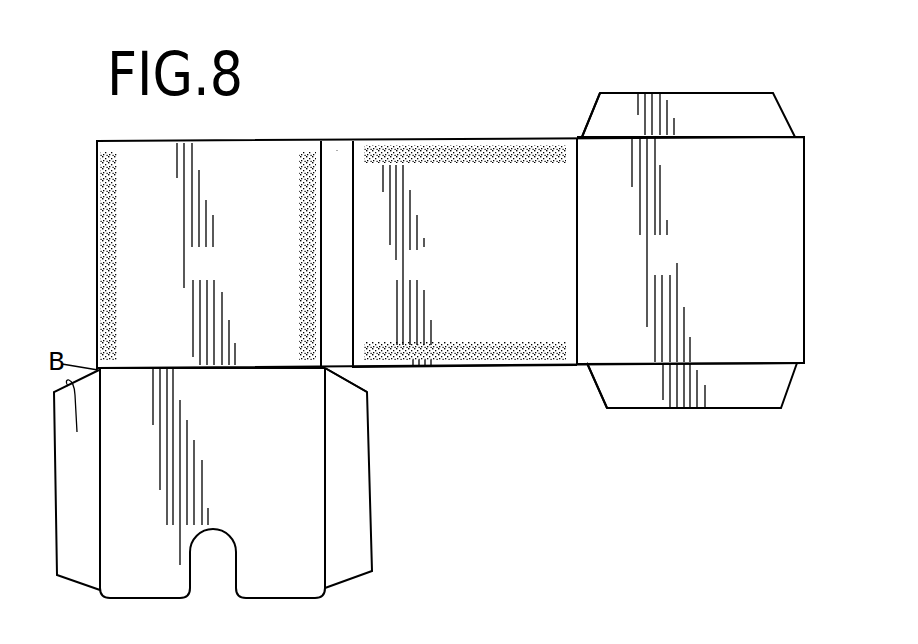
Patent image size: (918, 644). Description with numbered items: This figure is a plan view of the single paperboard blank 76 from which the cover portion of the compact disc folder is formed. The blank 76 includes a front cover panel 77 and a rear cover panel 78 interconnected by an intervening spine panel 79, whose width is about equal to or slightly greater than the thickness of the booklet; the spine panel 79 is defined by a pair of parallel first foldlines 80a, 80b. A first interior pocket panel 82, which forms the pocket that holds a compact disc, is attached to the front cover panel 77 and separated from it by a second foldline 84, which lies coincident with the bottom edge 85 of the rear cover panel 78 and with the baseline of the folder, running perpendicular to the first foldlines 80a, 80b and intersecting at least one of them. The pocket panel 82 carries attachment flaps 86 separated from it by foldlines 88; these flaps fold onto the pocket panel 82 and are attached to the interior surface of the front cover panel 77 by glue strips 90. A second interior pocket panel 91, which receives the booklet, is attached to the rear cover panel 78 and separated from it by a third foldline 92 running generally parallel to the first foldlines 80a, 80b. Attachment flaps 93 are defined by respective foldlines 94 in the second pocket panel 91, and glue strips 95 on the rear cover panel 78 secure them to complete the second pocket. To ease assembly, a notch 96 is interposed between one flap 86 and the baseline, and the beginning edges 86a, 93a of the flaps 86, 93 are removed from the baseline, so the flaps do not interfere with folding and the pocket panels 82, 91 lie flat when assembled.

The blank 76 is at (90, 182).
The front cover panel 77 is at (224, 272).
The rear cover panel 78 is at (449, 272).
The spine panel 79 is at (332, 165).
The first foldline 80a is at (320, 160).
The first foldline 80b is at (353, 160).
The first interior pocket panel 82 is at (237, 489).
The second foldline 84 is at (178, 367).
The bottom edge 85 is at (488, 368).
The attachment flaps 86 is at (94, 494).
The beginning edges 86a is at (335, 375).
The foldlines 88 is at (105, 537).
The glue strips 90 is at (117, 226).
The second interior pocket panel 91 is at (711, 268).
The third foldline 92 is at (578, 300).
The attachment flaps 93 is at (682, 125).
The beginning edges 93a is at (590, 135).
The foldlines 94 is at (757, 139).
The glue strips 95 is at (527, 152).
The notch 96 is at (580, 137).